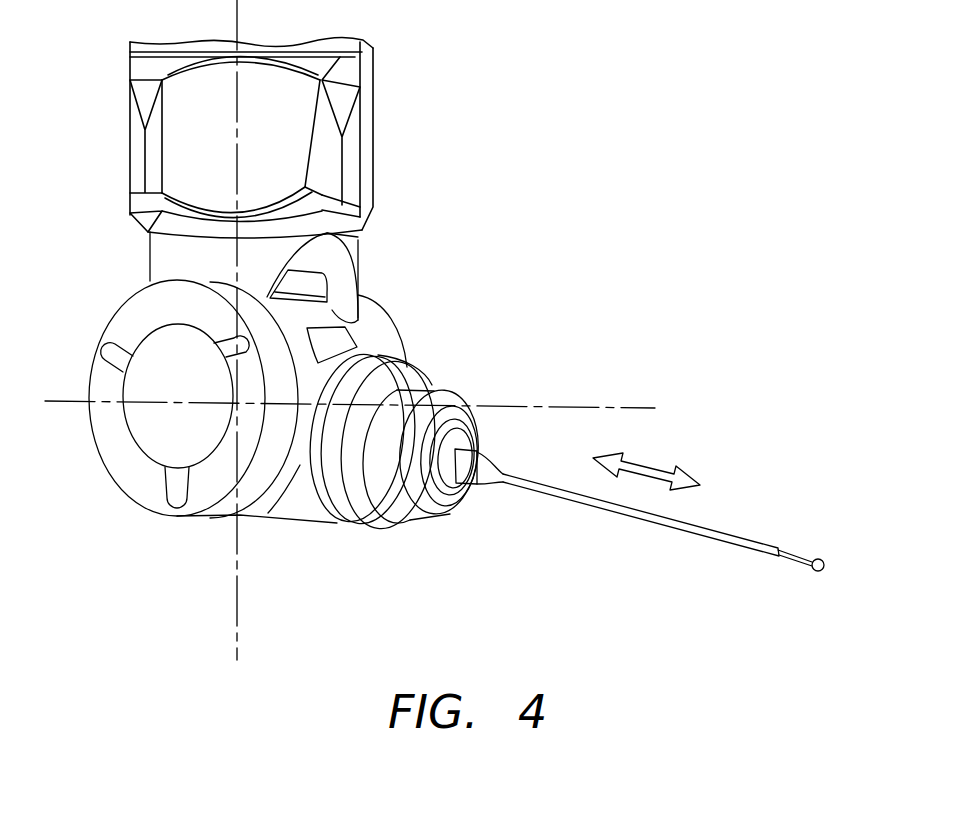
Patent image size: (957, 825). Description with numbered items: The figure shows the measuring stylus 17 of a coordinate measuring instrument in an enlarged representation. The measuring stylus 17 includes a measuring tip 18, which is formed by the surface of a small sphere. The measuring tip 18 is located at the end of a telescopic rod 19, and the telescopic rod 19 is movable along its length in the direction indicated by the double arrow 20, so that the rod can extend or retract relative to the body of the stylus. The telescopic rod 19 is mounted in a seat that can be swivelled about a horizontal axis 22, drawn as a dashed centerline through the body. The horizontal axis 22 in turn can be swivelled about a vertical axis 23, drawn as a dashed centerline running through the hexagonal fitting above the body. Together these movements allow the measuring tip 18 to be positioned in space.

The measuring stylus 17 is at (543, 286).
The measuring tip 18 is at (823, 557).
The telescopic rod 19 is at (645, 521).
The double arrow 20 is at (652, 463).
The horizontal axis 22 is at (598, 408).
The vertical axis 23 is at (237, 627).